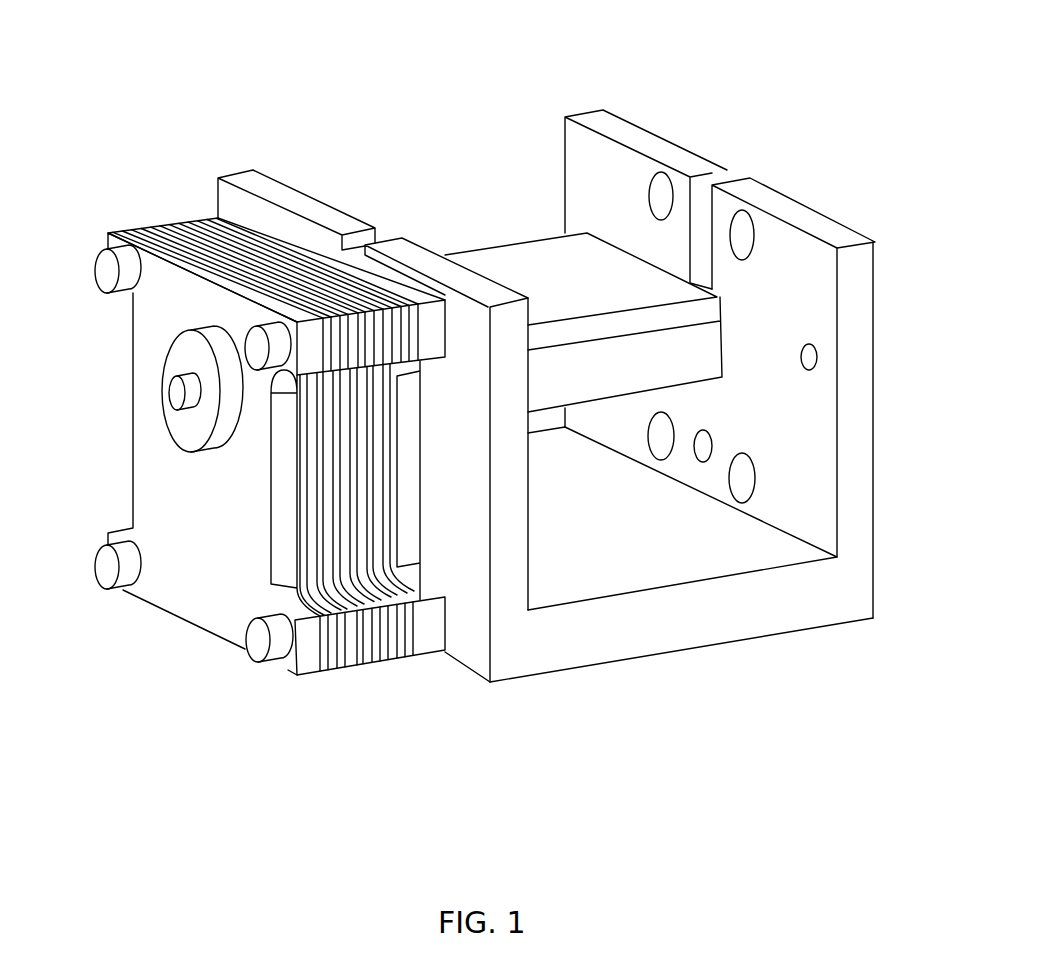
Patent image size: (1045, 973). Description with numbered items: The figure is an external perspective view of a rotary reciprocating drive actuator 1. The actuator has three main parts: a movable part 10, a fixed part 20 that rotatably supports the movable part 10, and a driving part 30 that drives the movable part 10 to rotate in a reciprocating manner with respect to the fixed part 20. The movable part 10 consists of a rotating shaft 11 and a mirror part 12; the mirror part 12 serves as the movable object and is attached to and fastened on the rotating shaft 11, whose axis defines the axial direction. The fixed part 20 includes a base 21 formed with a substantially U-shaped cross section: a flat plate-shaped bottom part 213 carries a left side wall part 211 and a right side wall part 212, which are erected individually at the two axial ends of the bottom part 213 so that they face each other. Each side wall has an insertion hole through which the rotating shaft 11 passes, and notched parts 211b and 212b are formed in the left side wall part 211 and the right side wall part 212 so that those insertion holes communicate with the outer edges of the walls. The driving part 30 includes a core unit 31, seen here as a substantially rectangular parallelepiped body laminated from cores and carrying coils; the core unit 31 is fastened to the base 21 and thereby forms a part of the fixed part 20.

The rotary reciprocating drive actuator 1 is at (702, 68).
The movable part 10 is at (375, 433).
The rotating shaft 11 is at (178, 397).
The mirror part 12 is at (510, 257).
The fixed part 20 is at (597, 682).
The base 21 is at (880, 503).
The left side wall part 211 is at (267, 180).
The notched part 211b is at (383, 238).
The right side wall part 212 is at (618, 120).
The notched part 212b is at (735, 177).
The bottom part 213 is at (730, 630).
The driving part 30 is at (352, 680).
The core unit 31 is at (177, 232).